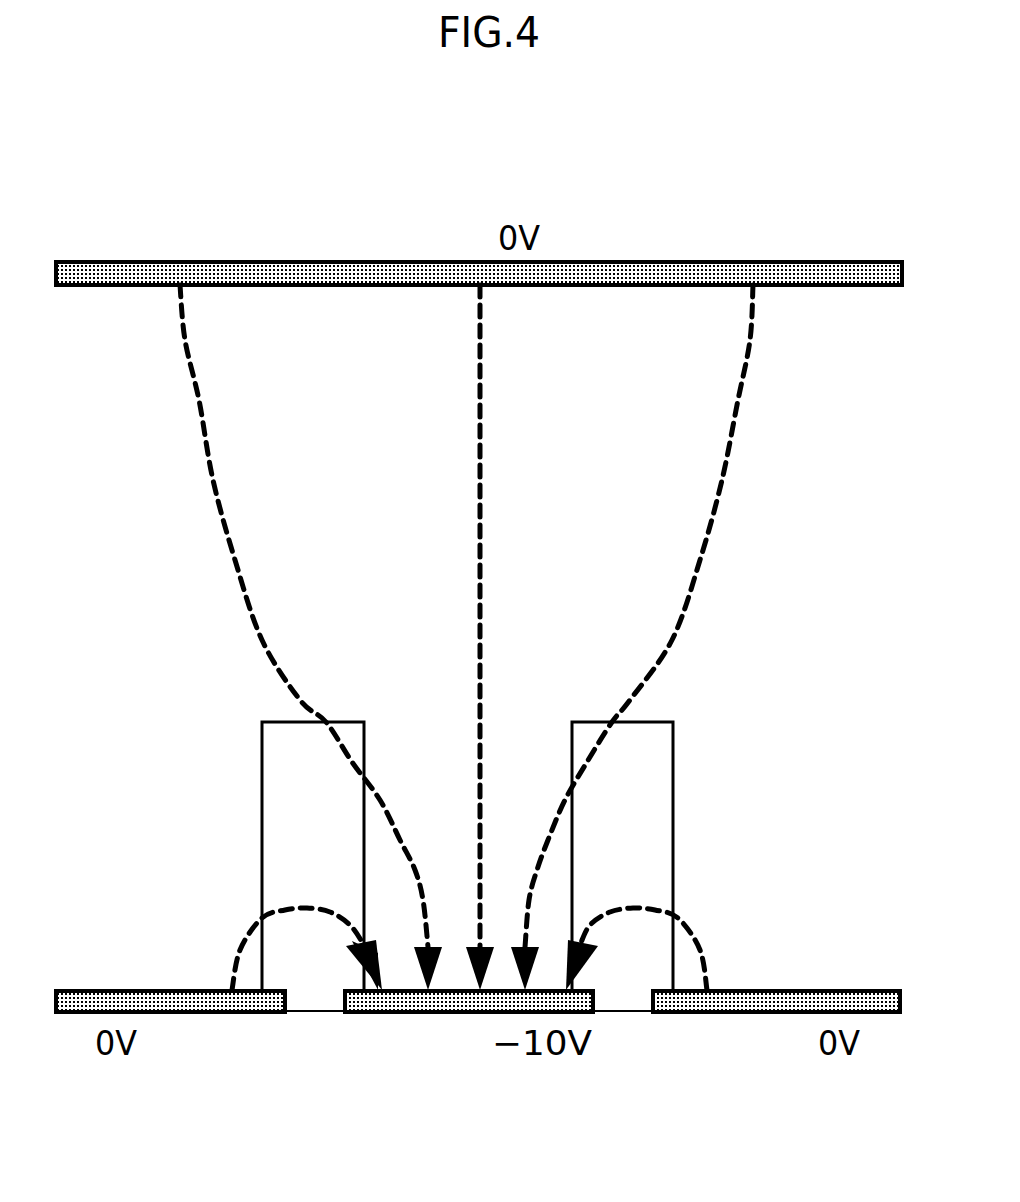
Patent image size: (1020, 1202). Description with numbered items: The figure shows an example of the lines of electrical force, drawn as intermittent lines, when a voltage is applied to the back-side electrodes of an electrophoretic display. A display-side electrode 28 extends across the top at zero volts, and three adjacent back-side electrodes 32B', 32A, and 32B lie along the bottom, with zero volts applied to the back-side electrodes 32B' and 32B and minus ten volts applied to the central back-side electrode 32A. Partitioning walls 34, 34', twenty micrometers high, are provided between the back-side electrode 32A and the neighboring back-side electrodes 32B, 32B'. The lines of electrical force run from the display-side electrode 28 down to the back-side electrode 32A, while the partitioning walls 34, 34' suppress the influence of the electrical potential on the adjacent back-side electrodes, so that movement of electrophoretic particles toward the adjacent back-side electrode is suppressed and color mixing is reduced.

The display-side electrode 28 is at (455, 262).
The back-side electrode 32A is at (455, 1013).
The back-side electrode 32B is at (776, 1065).
The back-side electrode 32B' is at (170, 1065).
The partitioning wall 34 is at (662, 856).
The partitioning wall 34' is at (268, 856).